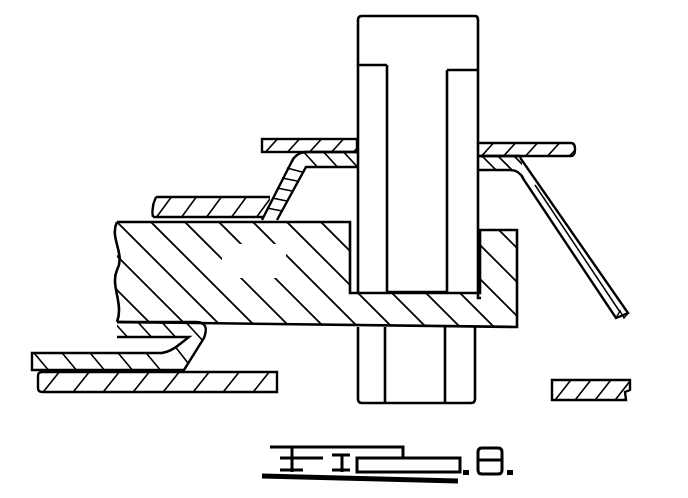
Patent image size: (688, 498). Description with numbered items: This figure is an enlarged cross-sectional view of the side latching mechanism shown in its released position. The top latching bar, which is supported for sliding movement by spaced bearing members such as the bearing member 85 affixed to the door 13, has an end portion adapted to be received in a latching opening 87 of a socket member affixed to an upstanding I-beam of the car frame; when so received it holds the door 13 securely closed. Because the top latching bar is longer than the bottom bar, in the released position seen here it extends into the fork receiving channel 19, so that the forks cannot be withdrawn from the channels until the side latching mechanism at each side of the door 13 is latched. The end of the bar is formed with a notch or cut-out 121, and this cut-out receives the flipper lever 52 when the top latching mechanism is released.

The door 13 is at (548, 146).
The fork receiving channel 19 is at (548, 215).
The flipper lever 52 is at (450, 100).
The bearing member 85 is at (173, 196).
The latching opening 87 is at (118, 225).
The notch or cut-out 121 is at (368, 250).